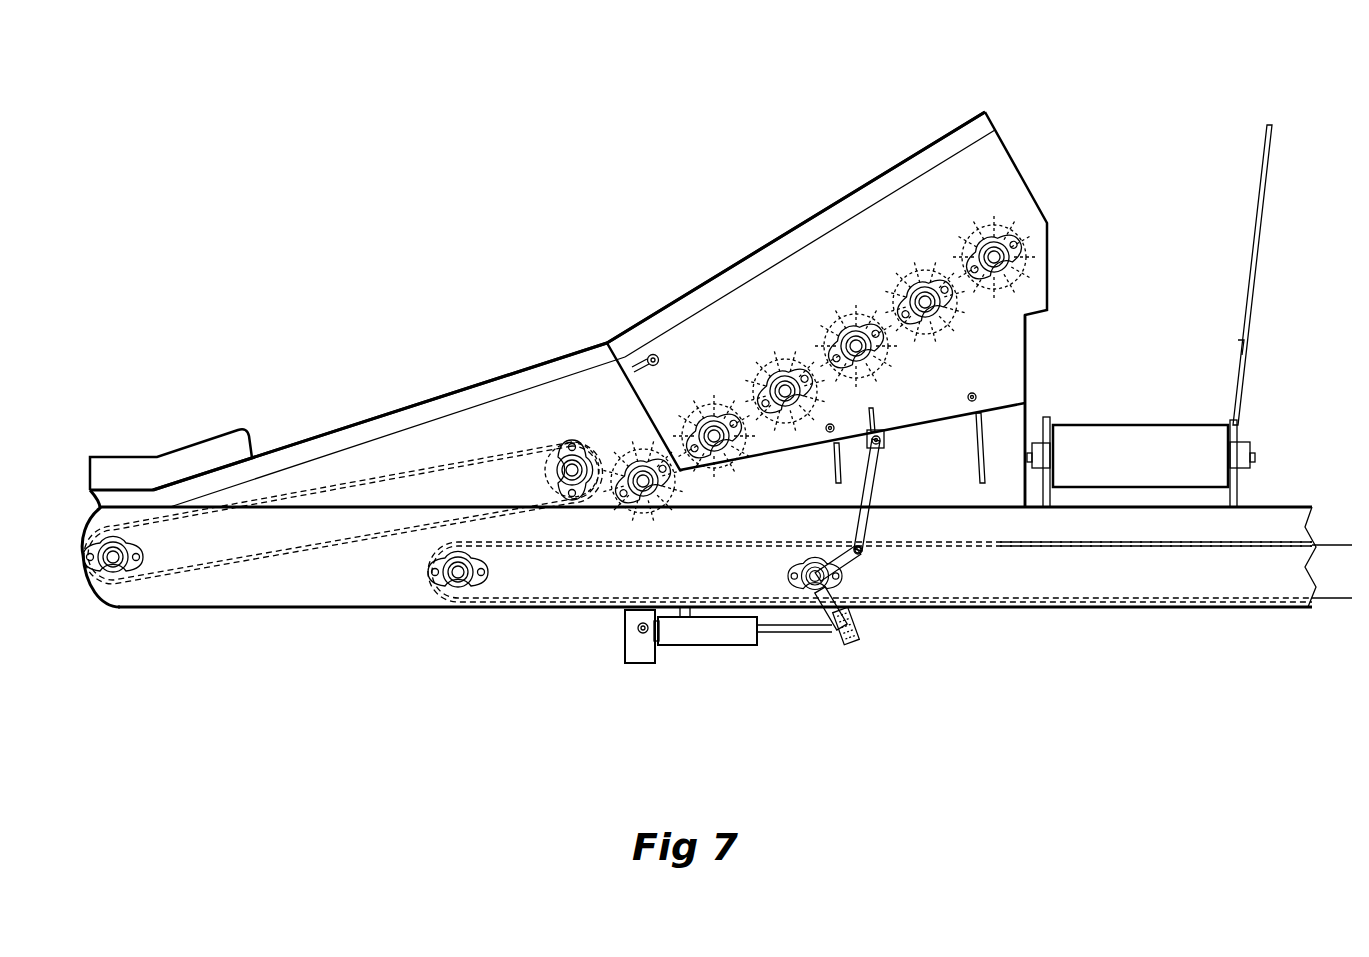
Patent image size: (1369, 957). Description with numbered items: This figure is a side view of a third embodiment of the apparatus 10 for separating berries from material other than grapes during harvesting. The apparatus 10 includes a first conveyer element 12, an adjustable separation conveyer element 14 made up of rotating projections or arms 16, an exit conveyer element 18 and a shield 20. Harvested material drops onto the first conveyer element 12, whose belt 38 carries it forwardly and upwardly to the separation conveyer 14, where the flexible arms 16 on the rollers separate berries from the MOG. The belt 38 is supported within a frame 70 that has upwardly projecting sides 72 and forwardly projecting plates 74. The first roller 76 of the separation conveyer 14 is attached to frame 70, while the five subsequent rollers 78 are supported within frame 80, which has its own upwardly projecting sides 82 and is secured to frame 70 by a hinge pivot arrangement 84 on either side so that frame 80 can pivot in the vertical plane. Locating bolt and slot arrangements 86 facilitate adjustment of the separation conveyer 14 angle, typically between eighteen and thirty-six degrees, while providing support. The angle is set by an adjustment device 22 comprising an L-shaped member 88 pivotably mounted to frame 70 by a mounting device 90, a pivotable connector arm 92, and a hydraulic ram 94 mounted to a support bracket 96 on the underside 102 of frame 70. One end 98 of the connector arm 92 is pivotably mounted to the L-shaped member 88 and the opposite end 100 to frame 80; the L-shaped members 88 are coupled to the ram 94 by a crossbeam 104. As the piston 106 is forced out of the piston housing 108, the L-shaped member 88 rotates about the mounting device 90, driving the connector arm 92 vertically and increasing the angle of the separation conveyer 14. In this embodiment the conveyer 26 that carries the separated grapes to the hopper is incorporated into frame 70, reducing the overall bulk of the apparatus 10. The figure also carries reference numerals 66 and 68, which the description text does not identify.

The apparatus 10 is at (423, 250).
The first conveyer element 12 is at (298, 402).
The separation conveyer element 14 is at (785, 210).
The projections or arms 16 is at (976, 212).
The exit conveyer element 18 is at (1137, 464).
The shield 20 is at (1255, 258).
The adjustment device 22 is at (729, 664).
The conveyer 26 is at (1123, 547).
The belt 38 is at (265, 556).
The guide member 66 is at (163, 470).
The roller bearing 68 is at (1257, 457).
The frame 70 is at (337, 586).
The upwardly projecting sides 72 is at (452, 400).
The forwardly projecting plates 74 is at (920, 478).
The first roller 76 is at (628, 462).
The subsequent rollers 78 is at (719, 422).
The frame 80 is at (979, 366).
The upwardly projecting sides 82 is at (907, 172).
The hinge pivot arrangement 84 is at (665, 462).
The locating bolt and slot arrangements 86 is at (657, 354).
The L-shaped member 88 is at (848, 606).
The mounting device 90 is at (800, 580).
The pivotable connector arm 92 is at (869, 520).
The hydraulic ram 94 is at (688, 640).
The support bracket 96 is at (633, 646).
The end of connector arm 98 is at (880, 548).
The opposite end of connector arm 100 is at (866, 447).
The underside of frame 102 is at (385, 632).
The crossbeam 104 is at (848, 646).
The piston 106 is at (776, 634).
The piston housing 108 is at (686, 609).